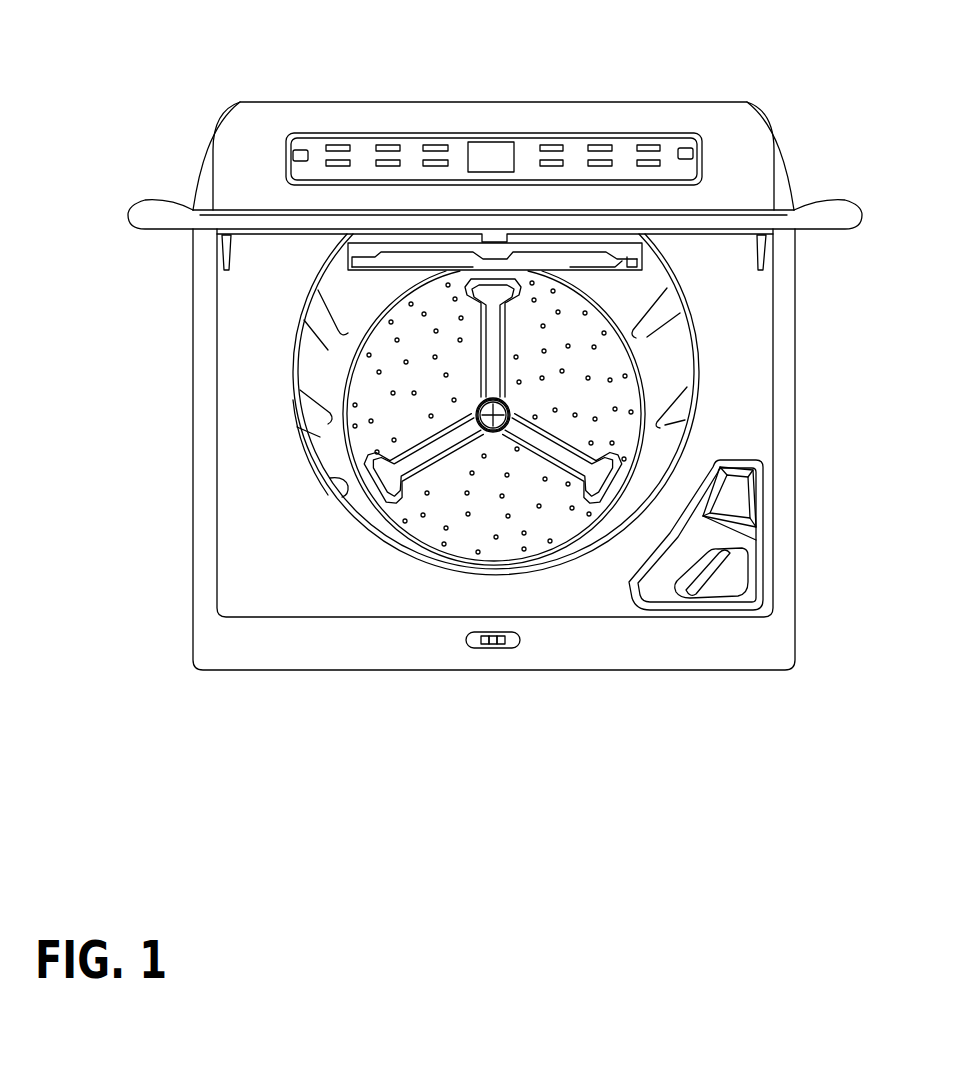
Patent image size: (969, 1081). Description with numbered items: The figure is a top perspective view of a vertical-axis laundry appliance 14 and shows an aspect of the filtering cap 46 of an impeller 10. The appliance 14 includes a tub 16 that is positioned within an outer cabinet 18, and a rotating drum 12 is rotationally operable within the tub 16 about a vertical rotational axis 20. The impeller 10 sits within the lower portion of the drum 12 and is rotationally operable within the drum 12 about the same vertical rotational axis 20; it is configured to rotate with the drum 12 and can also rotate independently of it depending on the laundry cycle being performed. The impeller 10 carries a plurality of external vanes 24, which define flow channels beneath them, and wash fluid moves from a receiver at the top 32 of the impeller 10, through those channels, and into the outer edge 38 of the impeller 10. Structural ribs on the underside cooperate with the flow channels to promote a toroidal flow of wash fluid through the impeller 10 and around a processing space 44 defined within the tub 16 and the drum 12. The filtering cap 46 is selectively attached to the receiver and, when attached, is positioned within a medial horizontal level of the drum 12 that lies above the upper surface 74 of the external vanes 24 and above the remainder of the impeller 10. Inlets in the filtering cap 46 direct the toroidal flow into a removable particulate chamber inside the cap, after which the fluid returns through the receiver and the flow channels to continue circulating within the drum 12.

The impeller 10 is at (336, 434).
The rotating drum 12 is at (668, 345).
The vertical-axis laundry appliance 14 is at (288, 88).
The tub 16 is at (683, 443).
The outer cabinet 18 is at (192, 543).
The vertical rotational axis 20 is at (505, 432).
The external vanes 24 is at (490, 327).
The top of the impeller 32 is at (497, 430).
The outer edge of the impeller 38 is at (352, 372).
The processing space 44 is at (641, 291).
The filtering cap 46 is at (468, 395).
The upper surface of the external vanes 74 is at (547, 411).